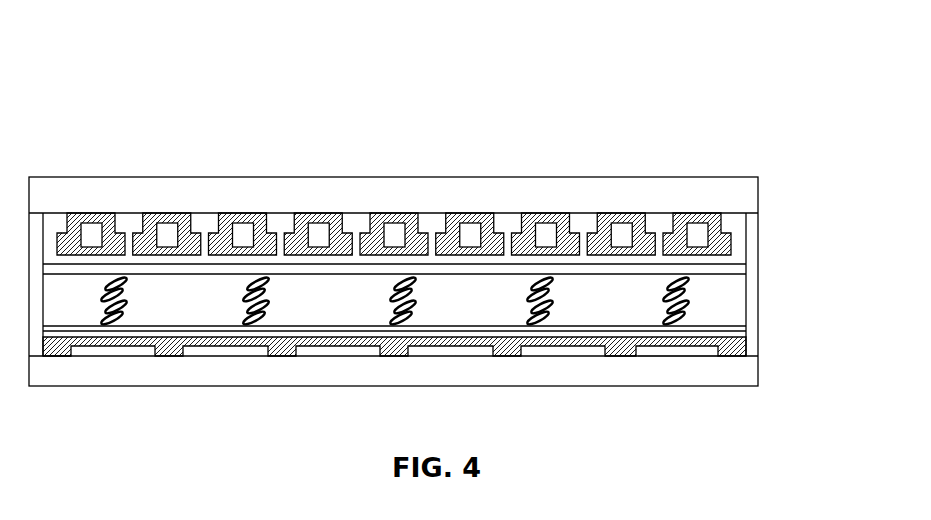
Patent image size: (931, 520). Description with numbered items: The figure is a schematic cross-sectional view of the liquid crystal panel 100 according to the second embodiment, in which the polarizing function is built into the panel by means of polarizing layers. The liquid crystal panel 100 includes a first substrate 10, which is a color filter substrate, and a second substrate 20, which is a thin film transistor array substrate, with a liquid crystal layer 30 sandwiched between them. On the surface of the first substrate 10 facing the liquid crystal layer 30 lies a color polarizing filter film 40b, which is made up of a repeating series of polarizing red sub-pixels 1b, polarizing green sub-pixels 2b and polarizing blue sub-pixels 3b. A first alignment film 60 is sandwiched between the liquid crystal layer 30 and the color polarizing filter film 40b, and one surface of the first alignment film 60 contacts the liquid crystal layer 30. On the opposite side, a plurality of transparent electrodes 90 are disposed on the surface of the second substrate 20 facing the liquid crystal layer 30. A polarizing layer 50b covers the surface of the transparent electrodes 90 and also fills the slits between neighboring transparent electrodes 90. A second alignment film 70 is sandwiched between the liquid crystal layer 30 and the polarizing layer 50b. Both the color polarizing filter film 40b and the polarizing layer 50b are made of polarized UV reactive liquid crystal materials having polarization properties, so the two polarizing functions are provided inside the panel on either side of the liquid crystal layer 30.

The liquid crystal panel 100 is at (441, 130).
The first substrate 10 is at (728, 197).
The second substrate 20 is at (726, 370).
The liquid crystal layer 30 is at (726, 305).
The first alignment film 60 is at (728, 268).
The second alignment film 70 is at (728, 333).
The transparent electrodes 90 is at (678, 350).
The color polarizing filter film 40b is at (235, 107).
The polarizing red sub-pixels 1b is at (95, 213).
The polarizing green sub-pixels 2b is at (168, 213).
The polarizing blue sub-pixels 3b is at (245, 213).
The polarizing layer 50b is at (55, 357).